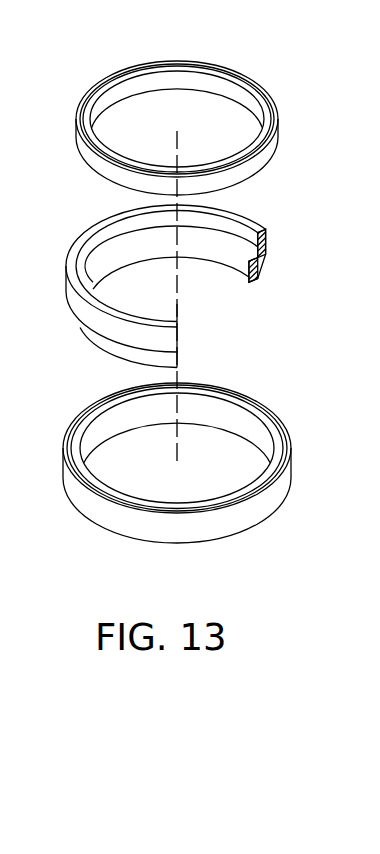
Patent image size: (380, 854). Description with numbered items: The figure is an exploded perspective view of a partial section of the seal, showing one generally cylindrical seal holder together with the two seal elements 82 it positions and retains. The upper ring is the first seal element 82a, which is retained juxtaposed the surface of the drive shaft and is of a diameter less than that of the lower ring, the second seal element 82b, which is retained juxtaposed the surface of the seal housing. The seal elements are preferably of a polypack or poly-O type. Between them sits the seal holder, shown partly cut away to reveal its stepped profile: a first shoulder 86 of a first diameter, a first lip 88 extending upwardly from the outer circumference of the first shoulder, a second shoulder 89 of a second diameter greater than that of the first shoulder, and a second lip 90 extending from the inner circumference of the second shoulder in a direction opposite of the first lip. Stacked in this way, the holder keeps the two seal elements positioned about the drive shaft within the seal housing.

The seal elements 82 is at (218, 296).
The first seal element 82a is at (267, 113).
The second seal element 82b is at (277, 498).
The first shoulder 86 is at (240, 243).
The first lip 88 is at (262, 229).
The second shoulder 89 is at (261, 258).
The second lip 90 is at (253, 281).